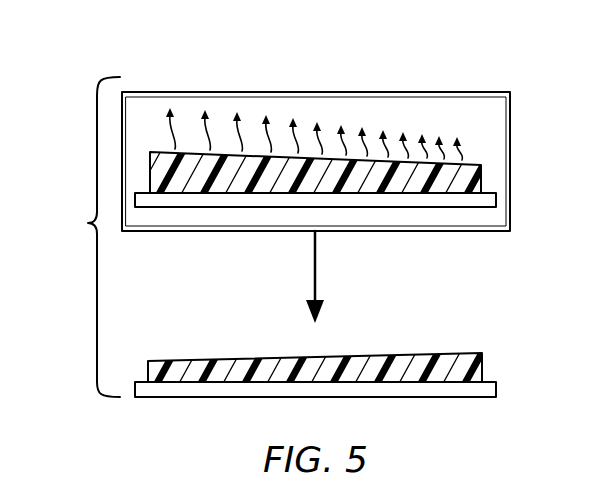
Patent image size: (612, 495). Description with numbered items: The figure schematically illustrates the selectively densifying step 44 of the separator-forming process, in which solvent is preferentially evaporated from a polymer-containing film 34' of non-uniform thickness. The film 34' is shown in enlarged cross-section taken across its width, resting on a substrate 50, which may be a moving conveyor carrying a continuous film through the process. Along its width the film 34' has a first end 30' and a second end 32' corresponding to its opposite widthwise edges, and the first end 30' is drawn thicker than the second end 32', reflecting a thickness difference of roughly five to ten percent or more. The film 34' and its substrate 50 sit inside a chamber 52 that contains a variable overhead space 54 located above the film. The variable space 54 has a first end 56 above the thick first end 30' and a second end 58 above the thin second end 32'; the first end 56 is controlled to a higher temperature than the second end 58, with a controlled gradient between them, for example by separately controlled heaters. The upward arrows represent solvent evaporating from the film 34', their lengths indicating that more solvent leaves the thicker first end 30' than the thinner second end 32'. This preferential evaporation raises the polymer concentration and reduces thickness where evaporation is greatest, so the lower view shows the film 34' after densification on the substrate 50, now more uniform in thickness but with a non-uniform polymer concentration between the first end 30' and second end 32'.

The selectively densifying step 44 is at (88, 223).
The substrate 50 is at (157, 202).
The first end 30' is at (315, 262).
The second end 32' is at (455, 277).
The film 34' is at (267, 280).
The chamber 52 is at (255, 93).
The variable overhead space 54 is at (300, 123).
The first end of variable space 56 is at (150, 124).
The second end of variable space 58 is at (480, 122).